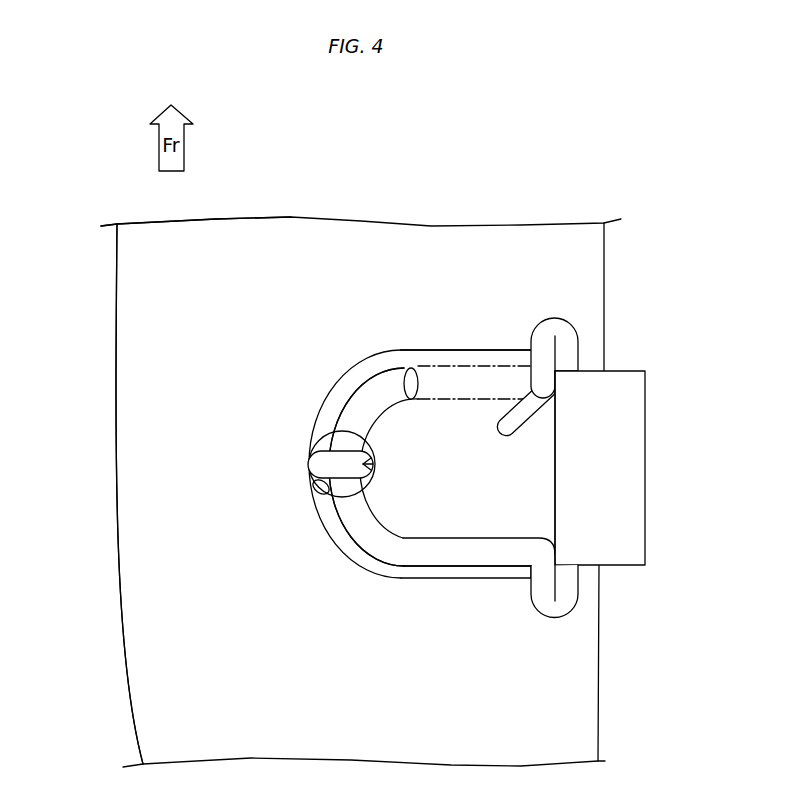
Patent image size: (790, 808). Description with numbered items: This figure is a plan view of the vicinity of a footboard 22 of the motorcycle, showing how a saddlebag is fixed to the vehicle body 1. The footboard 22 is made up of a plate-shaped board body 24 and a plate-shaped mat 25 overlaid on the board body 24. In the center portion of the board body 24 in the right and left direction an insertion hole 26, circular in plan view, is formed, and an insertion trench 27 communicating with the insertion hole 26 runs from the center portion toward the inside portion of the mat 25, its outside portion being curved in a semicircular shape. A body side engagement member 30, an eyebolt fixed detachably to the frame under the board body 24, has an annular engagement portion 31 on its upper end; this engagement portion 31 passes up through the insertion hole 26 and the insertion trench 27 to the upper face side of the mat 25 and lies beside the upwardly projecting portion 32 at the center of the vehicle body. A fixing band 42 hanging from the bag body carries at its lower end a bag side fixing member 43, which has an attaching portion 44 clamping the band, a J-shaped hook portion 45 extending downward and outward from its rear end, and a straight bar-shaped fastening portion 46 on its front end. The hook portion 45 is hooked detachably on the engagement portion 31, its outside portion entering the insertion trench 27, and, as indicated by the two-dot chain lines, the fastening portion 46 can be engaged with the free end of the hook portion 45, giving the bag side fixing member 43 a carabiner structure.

The vehicle body 1 is at (118, 711).
The footboard 22 is at (126, 440).
The board body 24 is at (362, 558).
The mat 25 is at (130, 352).
The insertion hole 26 is at (308, 483).
The insertion trench 27 is at (446, 352).
The body side engagement member 30 is at (372, 465).
The engagement portion 31 is at (315, 463).
The projecting portion 32 is at (621, 292).
The fixing band 42 is at (643, 410).
The bag side fixing member 43 is at (433, 574).
The attaching portion 44 is at (542, 607).
The hook portion 45 is at (352, 525).
The fastening portion 46 is at (425, 400).